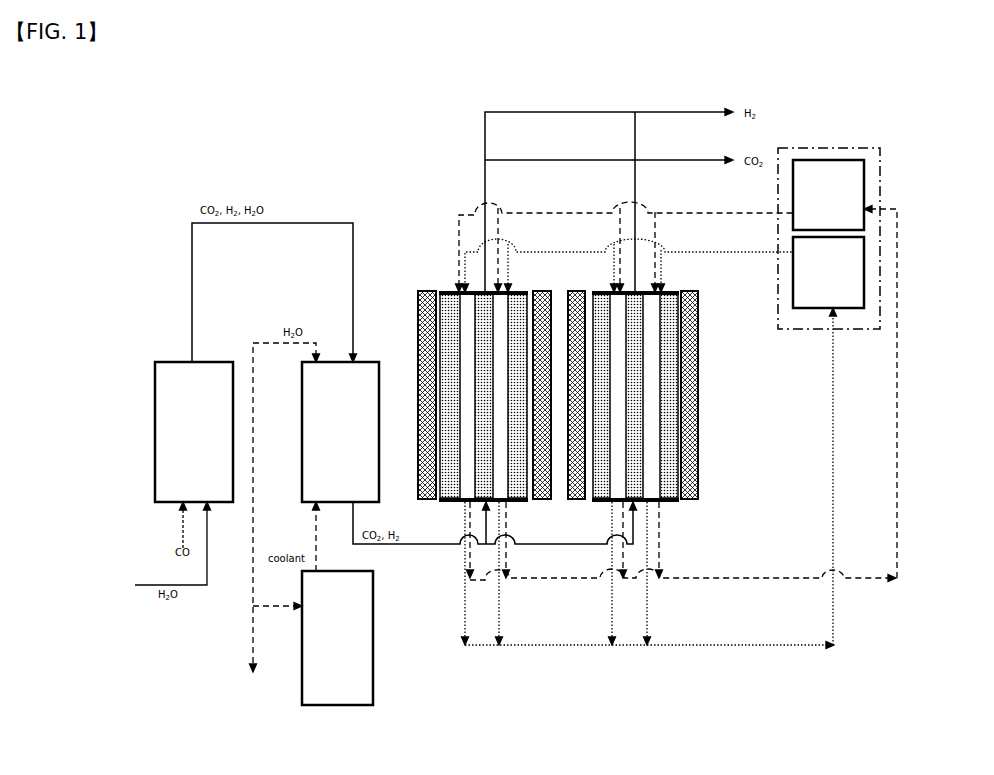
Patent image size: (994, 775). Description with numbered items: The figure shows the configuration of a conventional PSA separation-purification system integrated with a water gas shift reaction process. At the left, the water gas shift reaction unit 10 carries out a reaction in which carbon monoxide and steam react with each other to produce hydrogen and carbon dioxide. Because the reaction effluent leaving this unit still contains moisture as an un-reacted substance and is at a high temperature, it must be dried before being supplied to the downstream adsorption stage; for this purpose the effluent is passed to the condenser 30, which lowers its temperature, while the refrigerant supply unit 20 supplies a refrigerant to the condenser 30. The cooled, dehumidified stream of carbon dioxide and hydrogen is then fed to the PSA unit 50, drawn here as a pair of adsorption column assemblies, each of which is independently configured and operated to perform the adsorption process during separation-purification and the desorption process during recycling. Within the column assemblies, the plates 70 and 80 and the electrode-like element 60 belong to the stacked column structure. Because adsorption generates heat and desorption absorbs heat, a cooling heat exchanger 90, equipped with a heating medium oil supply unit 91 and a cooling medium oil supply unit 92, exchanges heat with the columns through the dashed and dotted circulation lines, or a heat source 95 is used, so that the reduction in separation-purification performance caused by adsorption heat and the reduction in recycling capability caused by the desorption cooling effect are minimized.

The water gas shift reaction unit 10 is at (155, 457).
The refrigerant supply unit 20 is at (373, 634).
The condenser 30 is at (376, 361).
The PSA unit 50 is at (591, 389).
The electrode 60 is at (680, 502).
The upper electrolyte/gas distribution plate 70 is at (676, 289).
The lower distribution plate 80 is at (597, 503).
The cooling heat exchanger 90 is at (856, 222).
The heating medium oil supply unit 91 is at (864, 176).
The cooling medium oil supply unit 92 is at (860, 265).
The heat source 95 is at (699, 392).